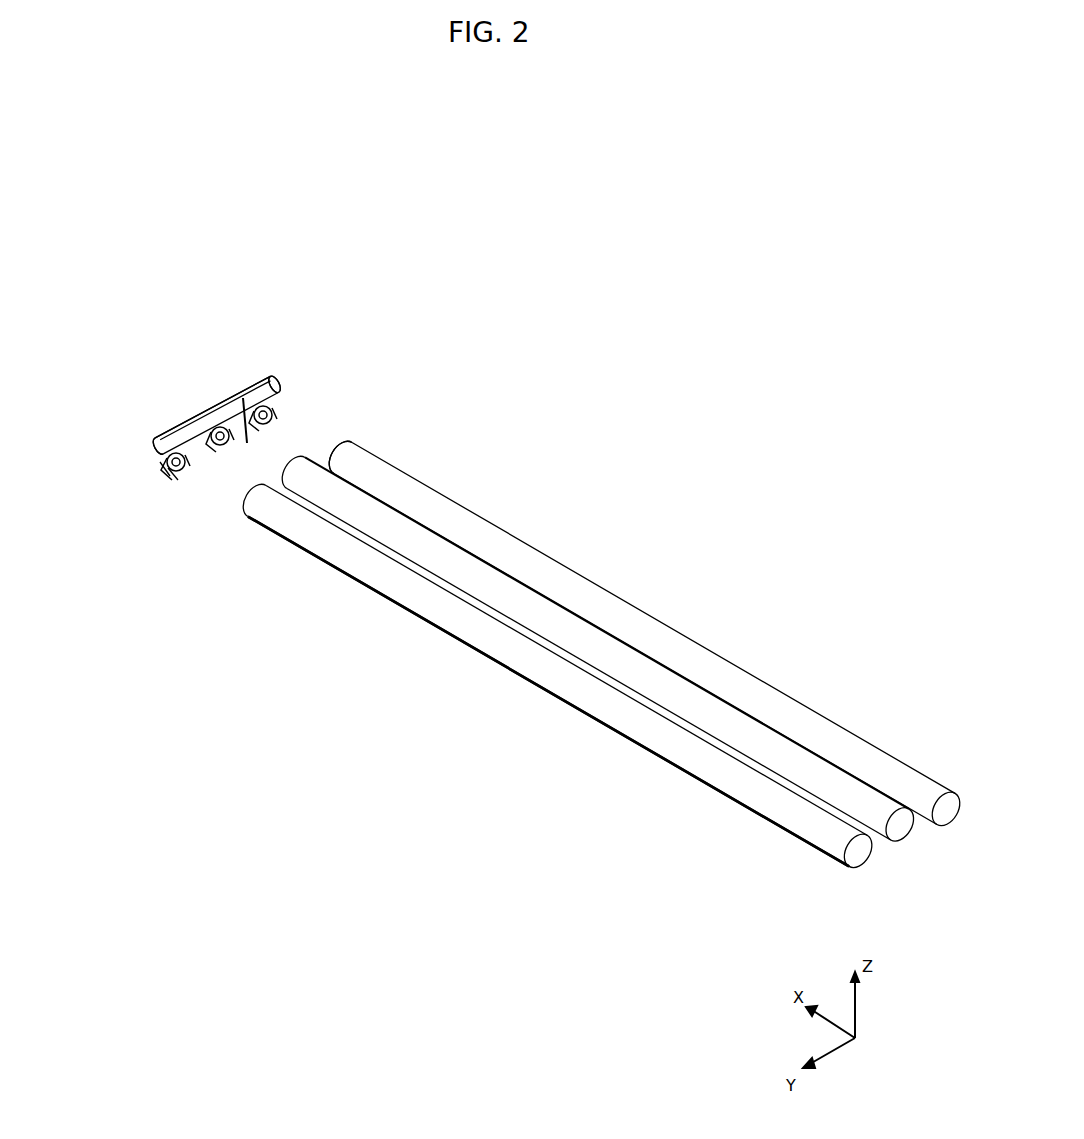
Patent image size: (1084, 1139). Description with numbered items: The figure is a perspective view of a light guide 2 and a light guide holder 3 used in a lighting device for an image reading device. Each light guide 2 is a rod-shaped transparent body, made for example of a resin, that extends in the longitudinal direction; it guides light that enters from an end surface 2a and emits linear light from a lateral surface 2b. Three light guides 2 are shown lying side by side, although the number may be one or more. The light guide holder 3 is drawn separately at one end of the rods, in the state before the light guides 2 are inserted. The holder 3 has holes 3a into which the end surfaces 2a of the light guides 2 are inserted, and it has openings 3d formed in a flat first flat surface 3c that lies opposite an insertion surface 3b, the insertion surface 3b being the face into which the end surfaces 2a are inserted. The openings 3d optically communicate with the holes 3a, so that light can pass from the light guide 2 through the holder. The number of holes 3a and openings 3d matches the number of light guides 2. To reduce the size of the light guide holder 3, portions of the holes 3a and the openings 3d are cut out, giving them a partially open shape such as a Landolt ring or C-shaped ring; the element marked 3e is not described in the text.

The light guide 2 is at (817, 733).
The end surface 2a is at (333, 453).
The lateral surface 2b is at (513, 647).
The light guide holder 3 is at (271, 375).
The hole 3a is at (173, 475).
The insertion surface 3b is at (273, 388).
The first flat surface 3c is at (205, 403).
The opening 3d is at (162, 458).
The partition portion 3e is at (245, 440).